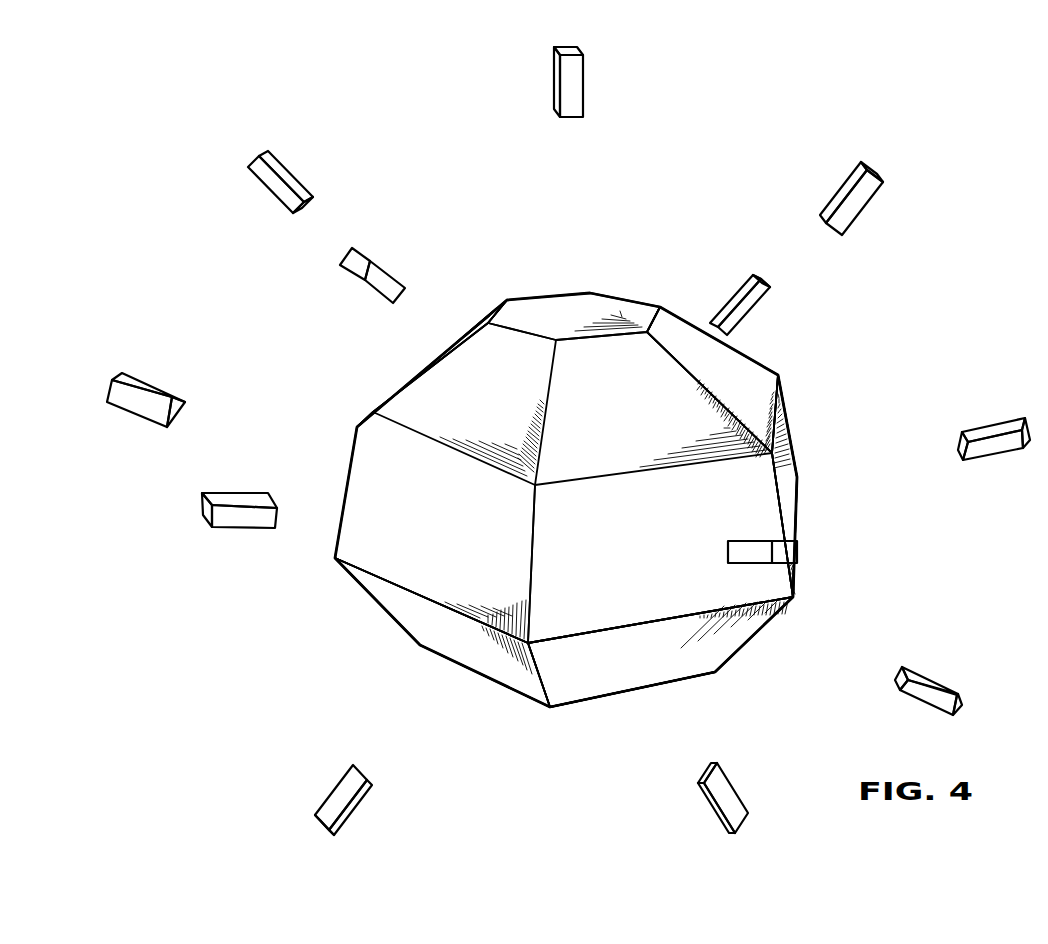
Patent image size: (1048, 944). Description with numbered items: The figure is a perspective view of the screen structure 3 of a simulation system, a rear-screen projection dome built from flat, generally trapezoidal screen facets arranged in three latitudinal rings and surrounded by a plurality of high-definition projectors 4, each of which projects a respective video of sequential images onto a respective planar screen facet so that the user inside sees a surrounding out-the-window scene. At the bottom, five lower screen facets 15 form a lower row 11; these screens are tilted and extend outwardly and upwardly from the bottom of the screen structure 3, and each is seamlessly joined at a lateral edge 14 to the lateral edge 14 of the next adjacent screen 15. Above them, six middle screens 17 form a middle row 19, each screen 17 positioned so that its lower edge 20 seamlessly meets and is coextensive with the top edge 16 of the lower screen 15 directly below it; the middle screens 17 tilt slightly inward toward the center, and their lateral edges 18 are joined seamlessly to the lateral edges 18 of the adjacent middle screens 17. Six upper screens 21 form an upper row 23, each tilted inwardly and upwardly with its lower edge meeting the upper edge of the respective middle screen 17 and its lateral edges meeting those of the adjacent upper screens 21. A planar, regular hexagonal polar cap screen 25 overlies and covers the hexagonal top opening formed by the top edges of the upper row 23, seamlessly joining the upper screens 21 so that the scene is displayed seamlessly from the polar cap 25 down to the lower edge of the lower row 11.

The screen structure 3 is at (925, 320).
The rear-screen projector 4 is at (792, 552).
The lower row 11 is at (802, 622).
The lateral edge 14 is at (757, 635).
The lower screen facet 15 is at (653, 670).
The top edge 16 is at (600, 642).
The middle screen 17 is at (787, 482).
The lateral edge 18 is at (782, 418).
The middle row 19 is at (848, 420).
The lower edge 20 is at (660, 607).
The upper screen 21 is at (742, 378).
The upper row 23 is at (365, 355).
The polar cap screen 25 is at (575, 306).